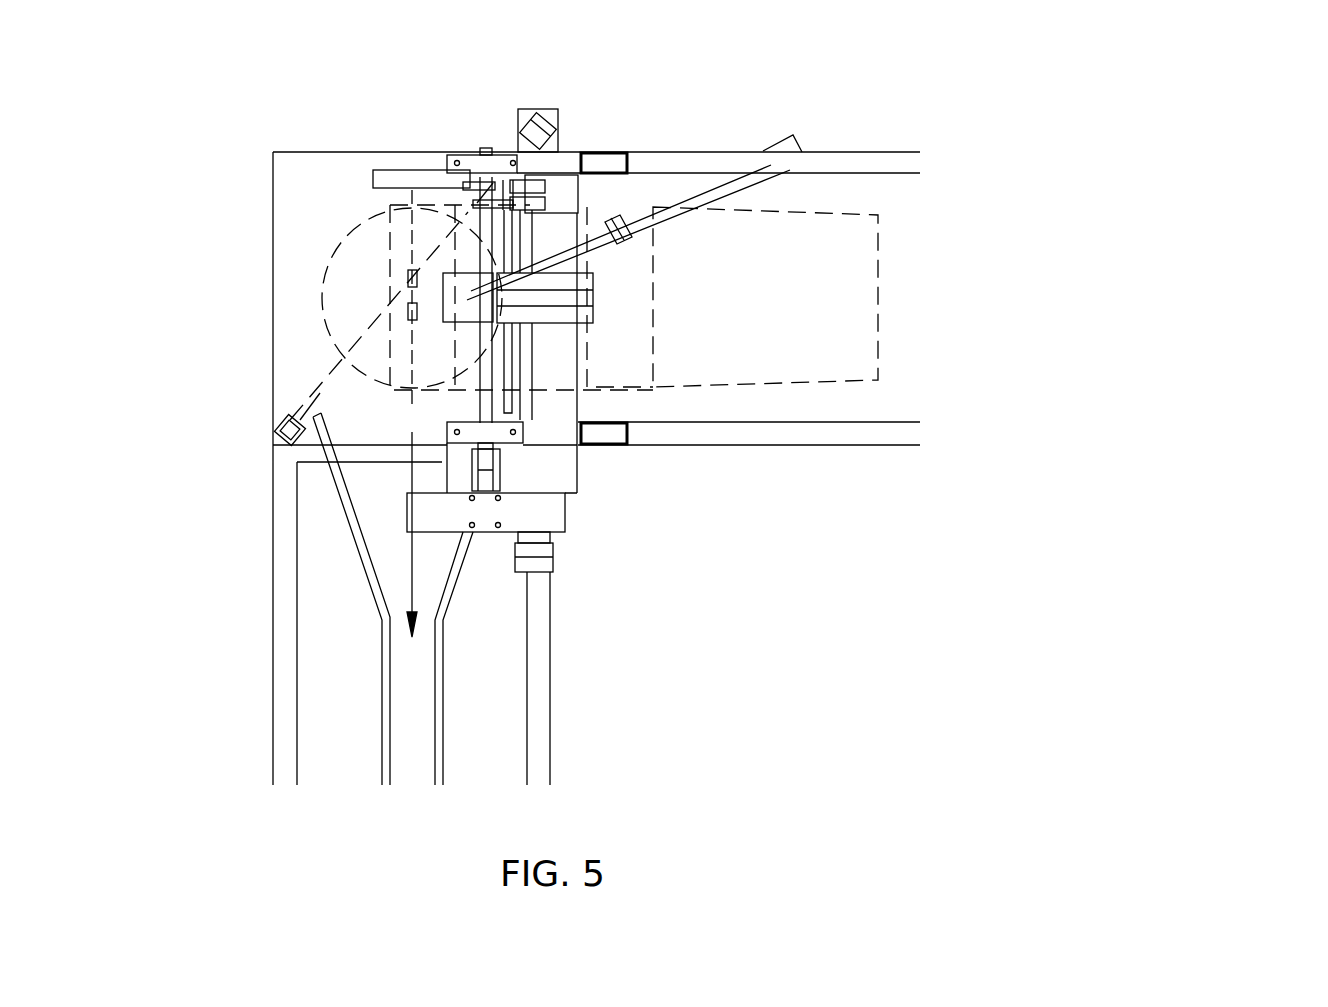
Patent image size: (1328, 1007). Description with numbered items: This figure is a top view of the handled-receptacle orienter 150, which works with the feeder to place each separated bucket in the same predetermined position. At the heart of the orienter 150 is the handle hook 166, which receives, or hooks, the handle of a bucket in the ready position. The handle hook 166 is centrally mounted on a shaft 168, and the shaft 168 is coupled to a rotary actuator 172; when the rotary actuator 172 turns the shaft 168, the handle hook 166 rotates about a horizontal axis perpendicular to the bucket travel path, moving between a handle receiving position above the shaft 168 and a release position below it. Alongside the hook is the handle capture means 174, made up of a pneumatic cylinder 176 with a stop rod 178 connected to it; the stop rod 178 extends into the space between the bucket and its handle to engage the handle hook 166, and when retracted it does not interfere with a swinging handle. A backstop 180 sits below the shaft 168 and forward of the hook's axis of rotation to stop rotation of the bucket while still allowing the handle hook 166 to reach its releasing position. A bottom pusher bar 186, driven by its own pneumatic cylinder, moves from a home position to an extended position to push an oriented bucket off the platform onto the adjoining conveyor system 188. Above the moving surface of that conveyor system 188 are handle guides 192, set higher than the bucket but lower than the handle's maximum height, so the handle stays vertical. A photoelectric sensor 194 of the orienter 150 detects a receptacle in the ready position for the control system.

The orienter 150 is at (1062, 280).
The handle hook 166 is at (413, 353).
The shaft 168 is at (483, 412).
The rotary actuator 172 is at (553, 517).
The handle capture means 174 is at (672, 192).
The pneumatic cylinder 176 is at (713, 182).
The stop rod 178 is at (592, 222).
The backstop 180 is at (523, 388).
The bottom pusher bar 186 is at (407, 172).
The adjoining conveyor system 188 is at (348, 620).
The handle guides 192 is at (383, 712).
The photoelectric sensor 194 is at (540, 127).